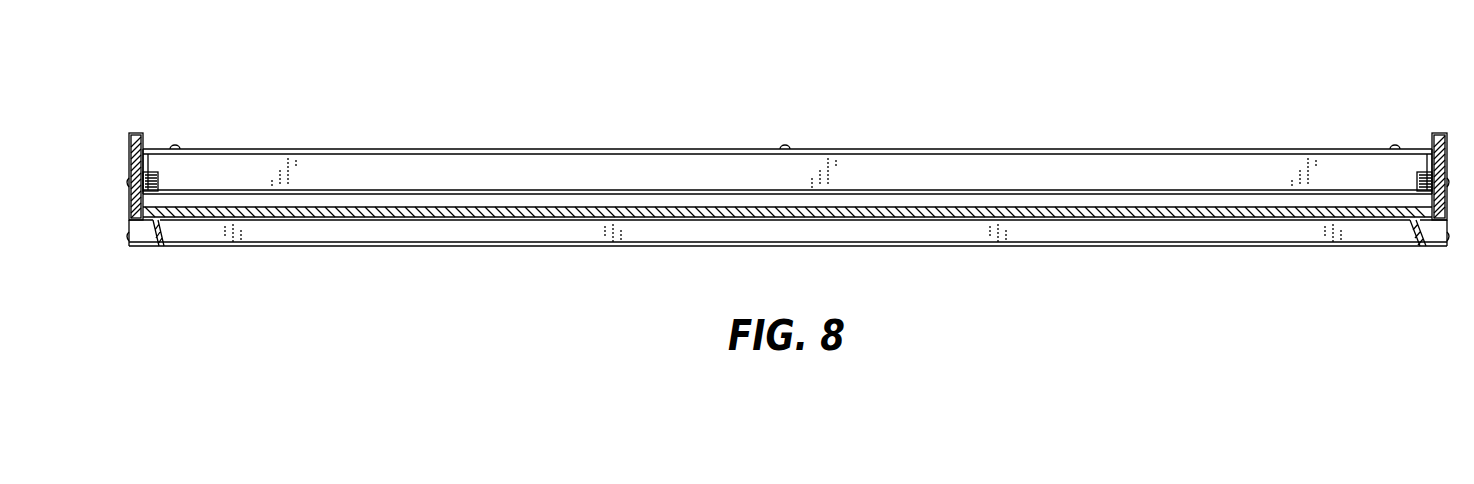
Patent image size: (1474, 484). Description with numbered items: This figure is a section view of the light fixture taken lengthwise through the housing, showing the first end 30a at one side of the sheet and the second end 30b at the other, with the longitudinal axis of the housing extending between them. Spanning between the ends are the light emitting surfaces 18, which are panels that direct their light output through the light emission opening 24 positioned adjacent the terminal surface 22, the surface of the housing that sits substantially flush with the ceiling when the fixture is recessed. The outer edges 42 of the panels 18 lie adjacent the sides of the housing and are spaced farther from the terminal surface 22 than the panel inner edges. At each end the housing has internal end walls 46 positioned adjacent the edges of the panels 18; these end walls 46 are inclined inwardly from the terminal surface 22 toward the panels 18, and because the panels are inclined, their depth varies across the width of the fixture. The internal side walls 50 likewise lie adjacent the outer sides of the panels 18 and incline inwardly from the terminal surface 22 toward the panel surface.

The first end 30a is at (116, 158).
The second end 30b is at (1456, 158).
The outer edges 42 is at (650, 189).
The light emitting surfaces 18 is at (873, 190).
The light emission opening 24 is at (701, 230).
The internal side walls 50 is at (1037, 232).
The terminal surface 22 is at (483, 245).
The internal end walls 46 is at (160, 232).